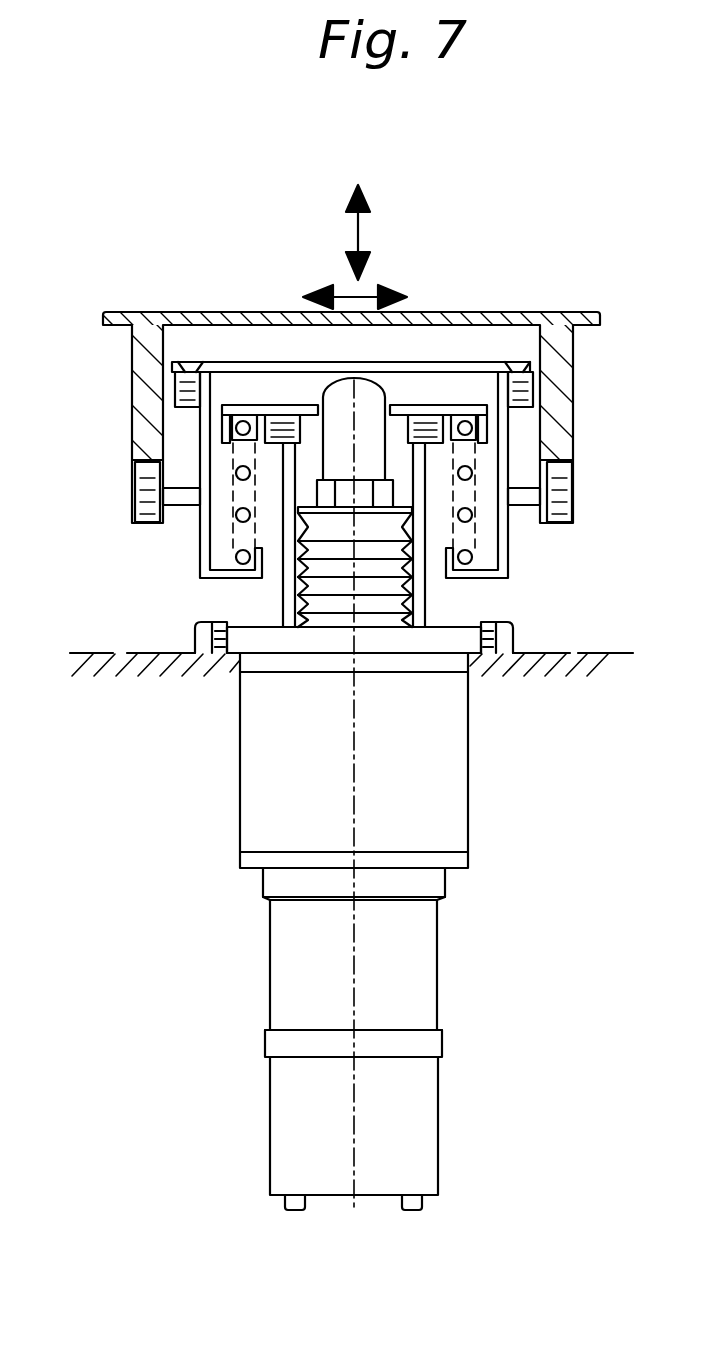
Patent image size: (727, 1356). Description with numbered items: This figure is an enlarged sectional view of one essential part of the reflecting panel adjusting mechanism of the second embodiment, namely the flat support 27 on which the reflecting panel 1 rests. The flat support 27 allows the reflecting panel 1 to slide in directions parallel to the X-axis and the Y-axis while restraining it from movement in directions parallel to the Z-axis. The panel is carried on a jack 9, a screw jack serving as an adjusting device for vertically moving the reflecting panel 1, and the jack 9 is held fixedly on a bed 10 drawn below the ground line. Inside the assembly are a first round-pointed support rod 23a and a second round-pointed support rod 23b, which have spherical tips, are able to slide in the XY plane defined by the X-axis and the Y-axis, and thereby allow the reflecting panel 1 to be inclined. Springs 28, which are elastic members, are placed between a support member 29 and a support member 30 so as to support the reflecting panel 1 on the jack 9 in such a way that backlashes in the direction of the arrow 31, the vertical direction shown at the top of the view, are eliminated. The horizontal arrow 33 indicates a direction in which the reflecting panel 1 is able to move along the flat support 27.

The reflecting panel 1 is at (117, 312).
The flat support 27 is at (238, 368).
The springs 28 is at (465, 442).
The support member 29 is at (507, 563).
The support member 30 is at (447, 410).
The arrow 31 is at (354, 237).
The arrow 33 is at (368, 295).
The first round-pointed support rod 23a is at (383, 393).
The second round-pointed support rod 23b is at (355, 493).
The bed 10 is at (527, 707).
The jack 9 is at (470, 827).